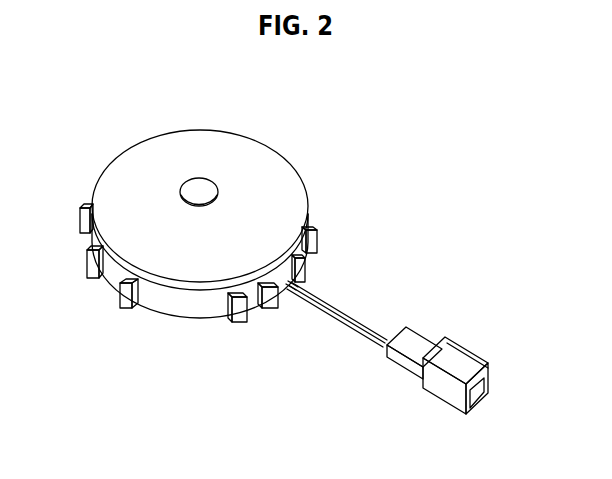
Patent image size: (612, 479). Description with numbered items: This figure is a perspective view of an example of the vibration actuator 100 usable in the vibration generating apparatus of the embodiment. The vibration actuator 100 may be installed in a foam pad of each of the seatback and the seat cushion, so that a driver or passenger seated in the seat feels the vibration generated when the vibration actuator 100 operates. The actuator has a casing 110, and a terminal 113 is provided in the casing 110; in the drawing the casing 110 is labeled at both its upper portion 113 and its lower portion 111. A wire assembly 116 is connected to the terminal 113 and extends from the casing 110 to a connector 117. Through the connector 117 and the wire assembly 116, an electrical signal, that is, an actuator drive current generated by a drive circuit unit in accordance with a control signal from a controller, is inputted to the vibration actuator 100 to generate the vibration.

The vibration actuator 100 is at (308, 147).
The casing 110 is at (189, 249).
The housing body 111 is at (177, 305).
The terminal 113 is at (143, 170).
The wire assembly 116 is at (360, 309).
The connector 117 is at (468, 350).